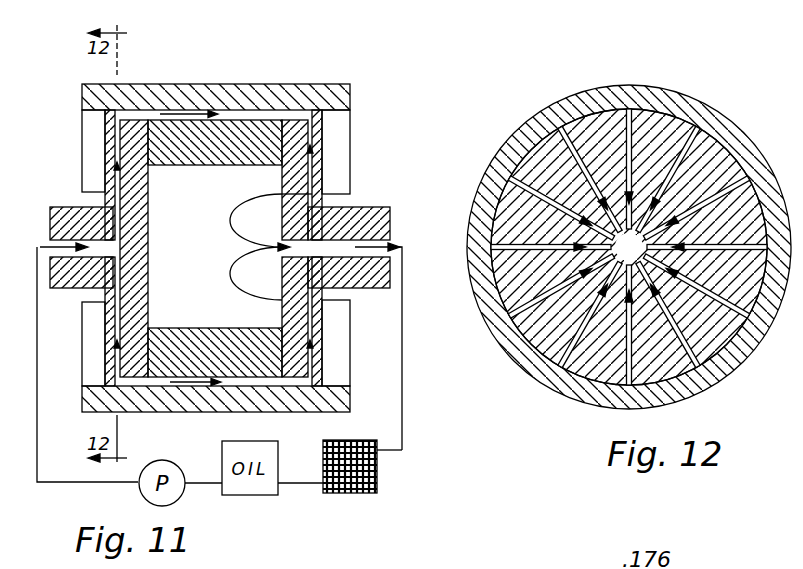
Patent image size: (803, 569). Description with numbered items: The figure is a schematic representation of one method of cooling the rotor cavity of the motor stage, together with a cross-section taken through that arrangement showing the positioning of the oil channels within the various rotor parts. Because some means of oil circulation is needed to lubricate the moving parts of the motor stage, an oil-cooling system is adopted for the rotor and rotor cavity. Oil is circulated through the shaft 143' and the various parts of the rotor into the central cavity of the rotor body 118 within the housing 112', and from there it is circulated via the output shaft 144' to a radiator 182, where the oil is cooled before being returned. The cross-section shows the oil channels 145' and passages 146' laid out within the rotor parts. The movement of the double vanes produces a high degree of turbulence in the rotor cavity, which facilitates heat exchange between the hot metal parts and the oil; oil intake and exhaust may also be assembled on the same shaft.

In FIG. 11, the housing 112' is at (216, 215).
In FIG. 12, the housing 112' is at (629, 226).
In FIG. 11, the radial passages / thin wall 145' is at (154, 202).
In FIG. 12, the radial passages / thin wall 145' is at (629, 220).
In FIG. 11, the thin wall 146' is at (333, 201).
In FIG. 11, the core block 118 is at (232, 125).
In FIG. 11, the shaft 143' is at (66, 226).
In FIG. 11, the output shaft 144' is at (367, 223).
In FIG. 11, the radiator 182 is at (377, 475).